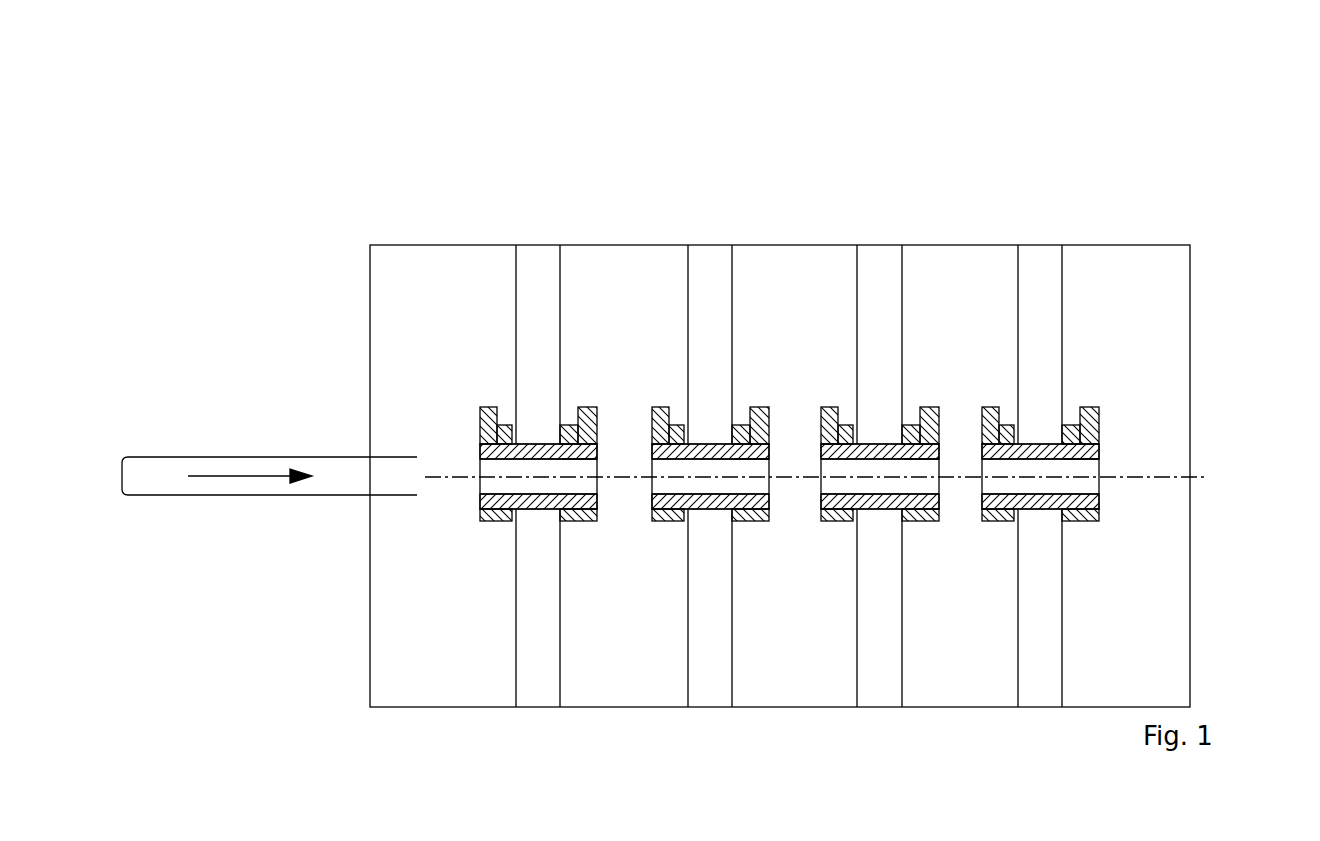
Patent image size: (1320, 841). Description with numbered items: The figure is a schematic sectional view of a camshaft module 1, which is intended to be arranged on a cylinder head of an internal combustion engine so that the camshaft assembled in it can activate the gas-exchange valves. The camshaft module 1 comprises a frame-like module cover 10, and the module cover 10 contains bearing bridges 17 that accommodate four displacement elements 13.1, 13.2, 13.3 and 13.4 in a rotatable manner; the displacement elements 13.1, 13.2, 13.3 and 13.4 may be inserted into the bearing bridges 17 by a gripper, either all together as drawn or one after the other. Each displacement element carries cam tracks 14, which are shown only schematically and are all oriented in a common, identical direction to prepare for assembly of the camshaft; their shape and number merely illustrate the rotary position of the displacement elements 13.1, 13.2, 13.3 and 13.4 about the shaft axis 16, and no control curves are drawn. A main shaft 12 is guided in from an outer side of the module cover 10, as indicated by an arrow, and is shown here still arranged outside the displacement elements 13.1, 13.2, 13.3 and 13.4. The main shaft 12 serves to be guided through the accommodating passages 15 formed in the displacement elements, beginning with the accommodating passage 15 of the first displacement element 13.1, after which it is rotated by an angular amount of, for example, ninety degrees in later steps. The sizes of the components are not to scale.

The camshaft module 1 is at (410, 166).
The module cover 10 is at (370, 272).
The main shaft 12 is at (256, 455).
The first displacement element 13.1 is at (509, 521).
The second displacement element 13.2 is at (681, 521).
The third displacement element 13.3 is at (849, 521).
The fourth displacement element 13.4 is at (1012, 521).
The cam tracks 14 is at (503, 425).
The accommodating passage 15 is at (565, 462).
The shaft axis 16 is at (1158, 478).
The bearing bridges 17 is at (540, 430).